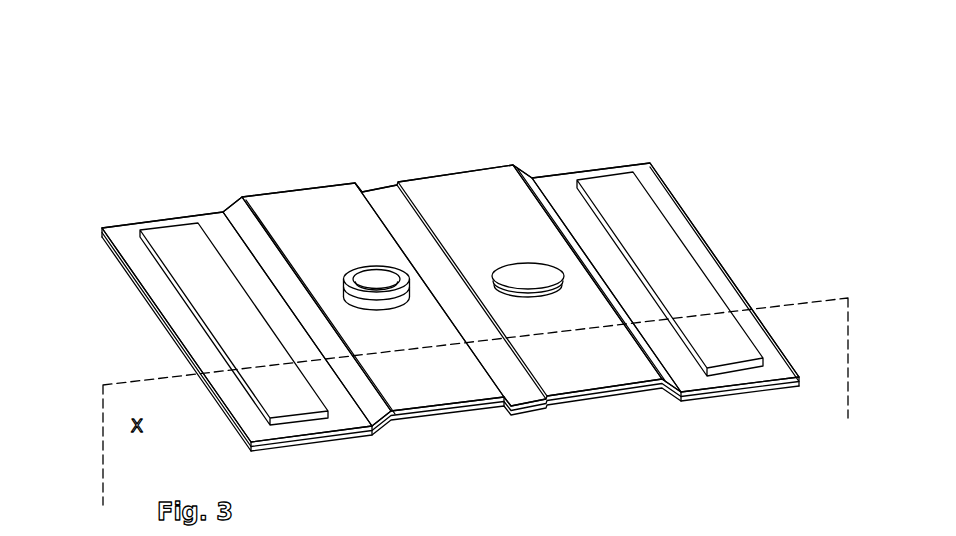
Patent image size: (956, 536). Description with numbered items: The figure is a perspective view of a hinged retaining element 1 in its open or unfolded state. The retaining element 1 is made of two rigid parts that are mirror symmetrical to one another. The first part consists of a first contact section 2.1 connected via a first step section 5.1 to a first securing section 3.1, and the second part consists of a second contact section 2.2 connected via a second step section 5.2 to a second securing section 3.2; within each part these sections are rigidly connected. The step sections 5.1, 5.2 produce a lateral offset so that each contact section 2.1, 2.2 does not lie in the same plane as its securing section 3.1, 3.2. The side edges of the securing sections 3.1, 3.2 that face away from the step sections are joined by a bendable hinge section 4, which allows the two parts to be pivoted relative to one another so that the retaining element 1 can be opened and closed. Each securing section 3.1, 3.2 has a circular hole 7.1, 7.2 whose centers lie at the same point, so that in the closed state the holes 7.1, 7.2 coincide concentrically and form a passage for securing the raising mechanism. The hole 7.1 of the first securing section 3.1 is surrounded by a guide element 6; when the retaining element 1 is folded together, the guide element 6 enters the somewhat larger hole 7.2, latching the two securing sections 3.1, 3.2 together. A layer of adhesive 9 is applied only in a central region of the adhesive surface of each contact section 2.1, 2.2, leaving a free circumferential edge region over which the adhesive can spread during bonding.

The retaining element 1 is at (133, 122).
The first contact section 2.1 is at (129, 252).
The second contact section 2.2 is at (662, 192).
The first securing section 3.1 is at (314, 227).
The second securing section 3.2 is at (478, 222).
The hinge section 4 is at (383, 197).
The first step section 5.1 is at (247, 225).
The second step section 5.2 is at (673, 403).
The guide element 6 is at (377, 283).
The hole 7.1 is at (386, 283).
The hole 7.2 is at (525, 285).
The adhesive 9 is at (203, 312).